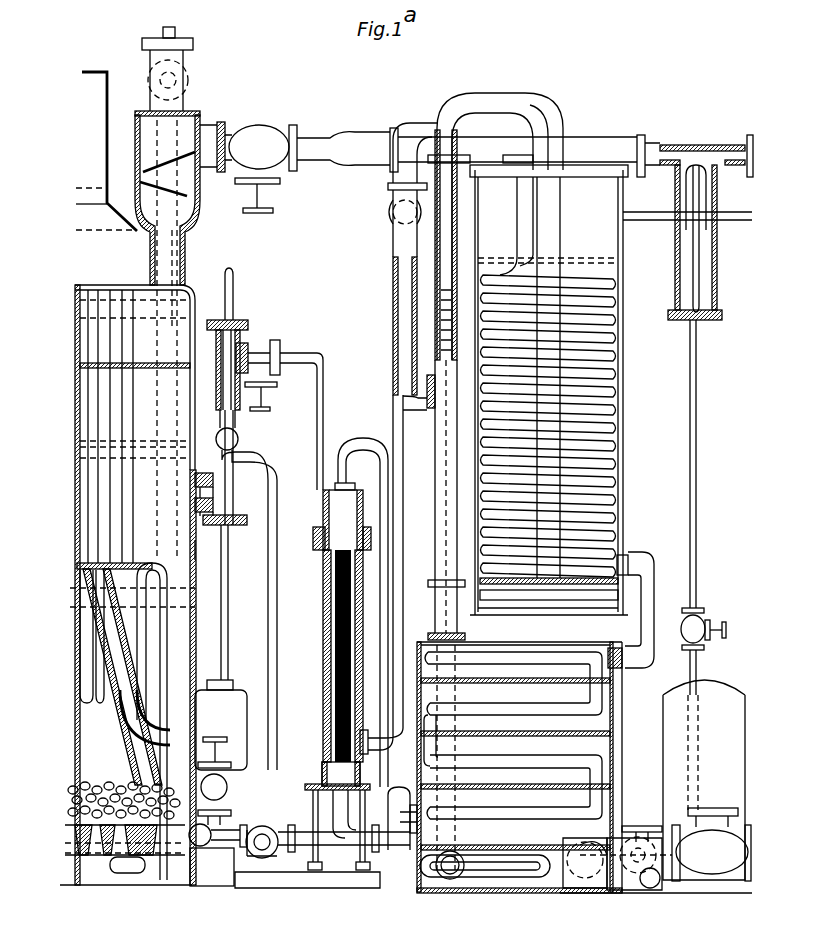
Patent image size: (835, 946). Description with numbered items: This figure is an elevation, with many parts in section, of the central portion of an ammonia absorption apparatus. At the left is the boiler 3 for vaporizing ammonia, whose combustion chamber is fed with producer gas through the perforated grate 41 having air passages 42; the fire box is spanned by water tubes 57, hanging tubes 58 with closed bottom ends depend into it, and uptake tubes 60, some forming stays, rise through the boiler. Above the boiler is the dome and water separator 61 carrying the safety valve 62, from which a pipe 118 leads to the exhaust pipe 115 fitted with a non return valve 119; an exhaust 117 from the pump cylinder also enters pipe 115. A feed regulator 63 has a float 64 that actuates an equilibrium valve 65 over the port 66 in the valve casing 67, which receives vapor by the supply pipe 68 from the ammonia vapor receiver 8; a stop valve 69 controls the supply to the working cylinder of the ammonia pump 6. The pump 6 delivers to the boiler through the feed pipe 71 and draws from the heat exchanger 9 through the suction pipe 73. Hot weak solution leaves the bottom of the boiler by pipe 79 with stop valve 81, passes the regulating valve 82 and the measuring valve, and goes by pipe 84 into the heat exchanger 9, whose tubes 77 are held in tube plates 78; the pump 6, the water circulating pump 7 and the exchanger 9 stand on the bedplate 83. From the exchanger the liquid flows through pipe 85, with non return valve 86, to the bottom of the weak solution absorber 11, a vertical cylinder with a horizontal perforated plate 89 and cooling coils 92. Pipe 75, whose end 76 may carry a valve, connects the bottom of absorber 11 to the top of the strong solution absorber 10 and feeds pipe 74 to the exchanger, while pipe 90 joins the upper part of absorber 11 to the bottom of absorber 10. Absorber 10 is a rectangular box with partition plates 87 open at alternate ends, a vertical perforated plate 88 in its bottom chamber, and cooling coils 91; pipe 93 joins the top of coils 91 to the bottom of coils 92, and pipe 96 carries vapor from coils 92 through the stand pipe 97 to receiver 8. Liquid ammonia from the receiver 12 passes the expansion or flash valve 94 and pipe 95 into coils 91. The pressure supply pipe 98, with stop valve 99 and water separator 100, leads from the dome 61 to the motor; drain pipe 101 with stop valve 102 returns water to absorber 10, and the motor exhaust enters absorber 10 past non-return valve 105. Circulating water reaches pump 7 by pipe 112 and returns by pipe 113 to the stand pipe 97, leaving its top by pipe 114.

The boiler 3 is at (196, 552).
The ammonia pump 6 is at (270, 828).
The water circulating pump 7 is at (261, 853).
The receiver for ammonia vapor 8 is at (221, 725).
The heat exchanger 9 is at (322, 688).
The absorber for strong solution of ammonia 10 is at (622, 702).
The absorber for weak solution of ammonia 11 is at (623, 405).
The receiver for anhydrous liquid ammonia 12 is at (656, 771).
The perforated grate 41 is at (82, 856).
The air passages 42 is at (96, 860).
The water tubes 57 is at (80, 735).
The hanging tubes 58 is at (94, 649).
The uptake tubes 60 is at (138, 502).
The dome and water separator 61 is at (180, 293).
The safety valve 62 is at (190, 62).
The feed regulator 63 is at (238, 432).
The float 64 is at (240, 458).
The equilibrium valve 65 is at (242, 336).
The port 66 is at (278, 345).
The valve casing 67 is at (240, 322).
The supply pipe 68 is at (235, 610).
The stop valve 69 is at (272, 395).
The feed or delivery pipe 71 is at (317, 512).
The supply or suction pipe 73 is at (272, 665).
The pipe 74 is at (393, 402).
The pipe 75 is at (497, 120).
The end of pipe 76 is at (465, 590).
The tubes 77 is at (335, 630).
The tube plates 78 is at (338, 636).
The pipe 79 is at (205, 848).
The stop valve 81 is at (214, 776).
The regulating valve 82 is at (250, 825).
The bedplate 83 is at (275, 888).
The pipe 84 is at (345, 810).
The pipe 85 is at (375, 470).
The non return valve 86 is at (462, 625).
The partition plates 87 is at (480, 685).
The vertical perforated plate 88 is at (575, 878).
The horizontal perforated plate 89 is at (549, 599).
The pipe 90 is at (440, 320).
The coils 91 is at (590, 665).
The coils 92 is at (613, 447).
The pipe 93 is at (660, 588).
The expansion or flash valve 94 is at (648, 888).
The pipe 95 is at (620, 880).
The pipe 96 is at (415, 126).
The stand pipe 97 is at (393, 237).
The pressure supply pipe 98 is at (471, 152).
The stop valve 99 is at (261, 169).
The water separator 100 is at (718, 140).
The drain pipe 101 is at (696, 420).
The stop valve 102 is at (708, 618).
The non-return valve 105 is at (711, 853).
The pipe 112 is at (320, 845).
The pipe 113 is at (370, 845).
The pipe 114 is at (687, 203).
The exhaust pipe 115 is at (405, 850).
The exhaust 117 is at (188, 870).
The pipe 118 is at (178, 330).
The non return valve 119 is at (648, 812).